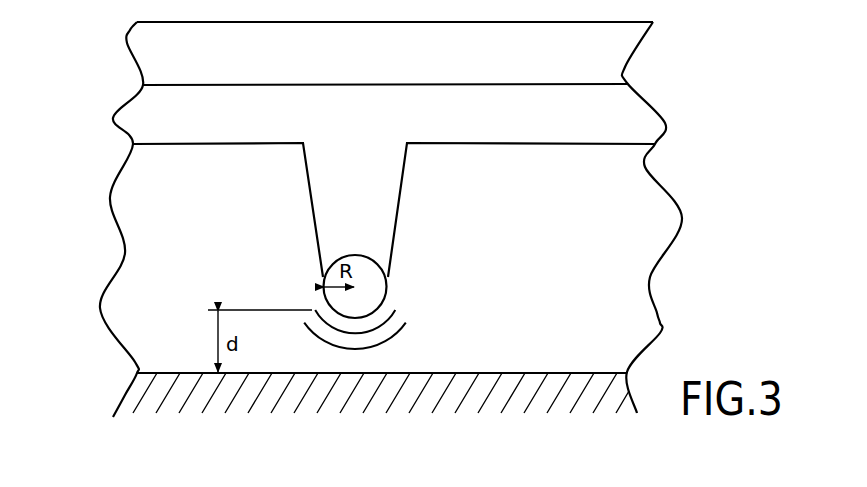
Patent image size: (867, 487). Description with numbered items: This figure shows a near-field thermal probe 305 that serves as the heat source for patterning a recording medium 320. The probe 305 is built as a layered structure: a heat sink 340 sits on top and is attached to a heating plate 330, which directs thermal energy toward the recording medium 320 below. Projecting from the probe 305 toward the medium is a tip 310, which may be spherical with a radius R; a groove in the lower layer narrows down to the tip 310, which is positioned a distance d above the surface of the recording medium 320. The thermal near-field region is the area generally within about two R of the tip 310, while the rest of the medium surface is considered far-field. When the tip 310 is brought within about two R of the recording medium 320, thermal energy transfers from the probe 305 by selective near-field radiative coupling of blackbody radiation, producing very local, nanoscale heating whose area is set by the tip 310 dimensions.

The near-field thermal probe 305 is at (351, 83).
The heat sink 340 is at (259, 68).
The heating plate 330 is at (259, 128).
The tip 310 is at (401, 310).
The recording medium 320 is at (376, 423).